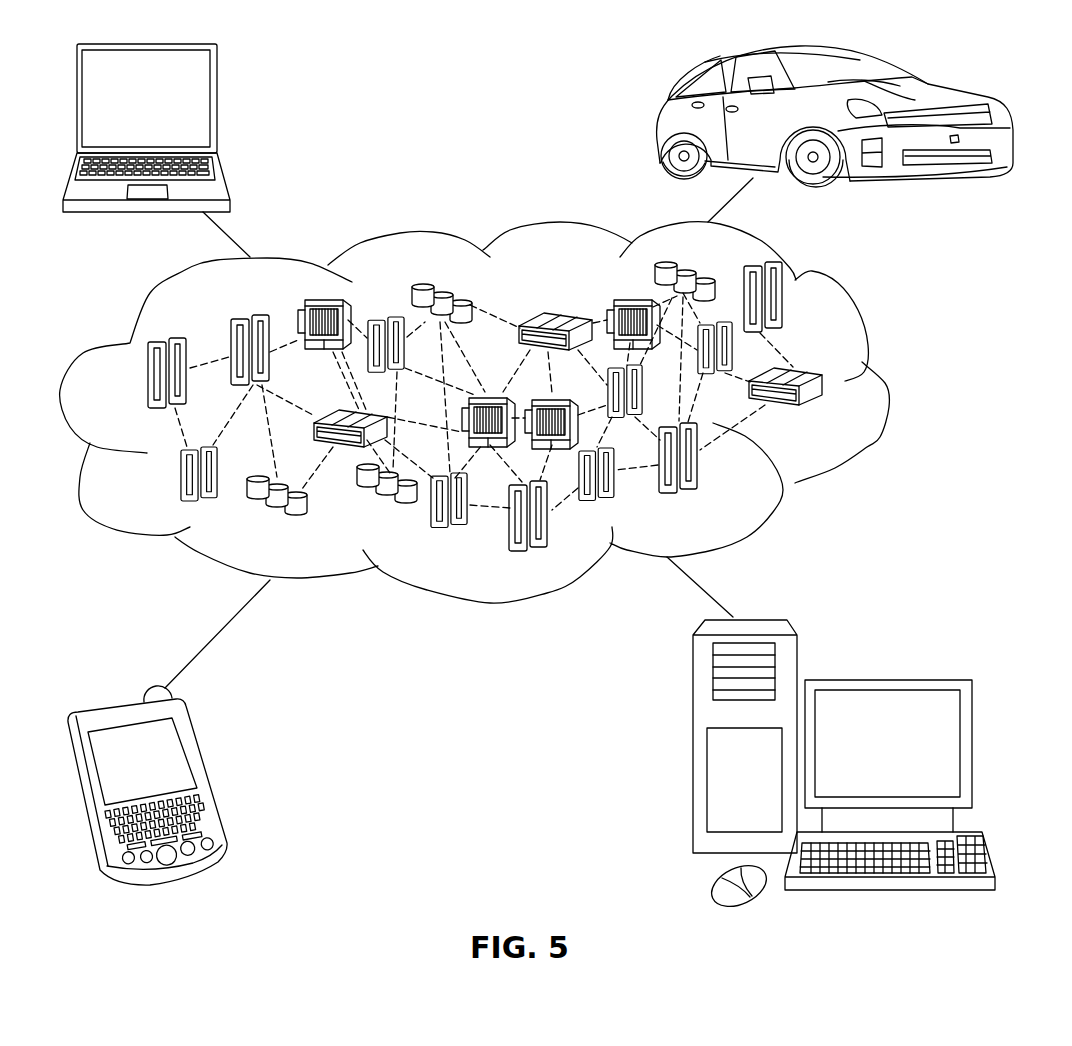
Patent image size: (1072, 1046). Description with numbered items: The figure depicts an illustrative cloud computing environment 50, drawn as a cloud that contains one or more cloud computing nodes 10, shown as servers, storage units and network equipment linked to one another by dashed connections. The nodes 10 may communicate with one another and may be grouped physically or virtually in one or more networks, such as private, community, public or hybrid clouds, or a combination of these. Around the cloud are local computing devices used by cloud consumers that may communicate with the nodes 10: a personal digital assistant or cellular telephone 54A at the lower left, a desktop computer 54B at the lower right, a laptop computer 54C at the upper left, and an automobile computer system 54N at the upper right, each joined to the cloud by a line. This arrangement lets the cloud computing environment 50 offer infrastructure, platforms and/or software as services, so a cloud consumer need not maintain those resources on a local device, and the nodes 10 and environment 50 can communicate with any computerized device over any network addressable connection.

The cloud computing node 10 is at (834, 418).
The cloud computing environment 50 is at (885, 383).
The personal digital assistant or cellular telephone 54A is at (207, 773).
The desktop computer 54B is at (885, 678).
The laptop computer 54C is at (217, 105).
The automobile computer system 54N is at (662, 121).